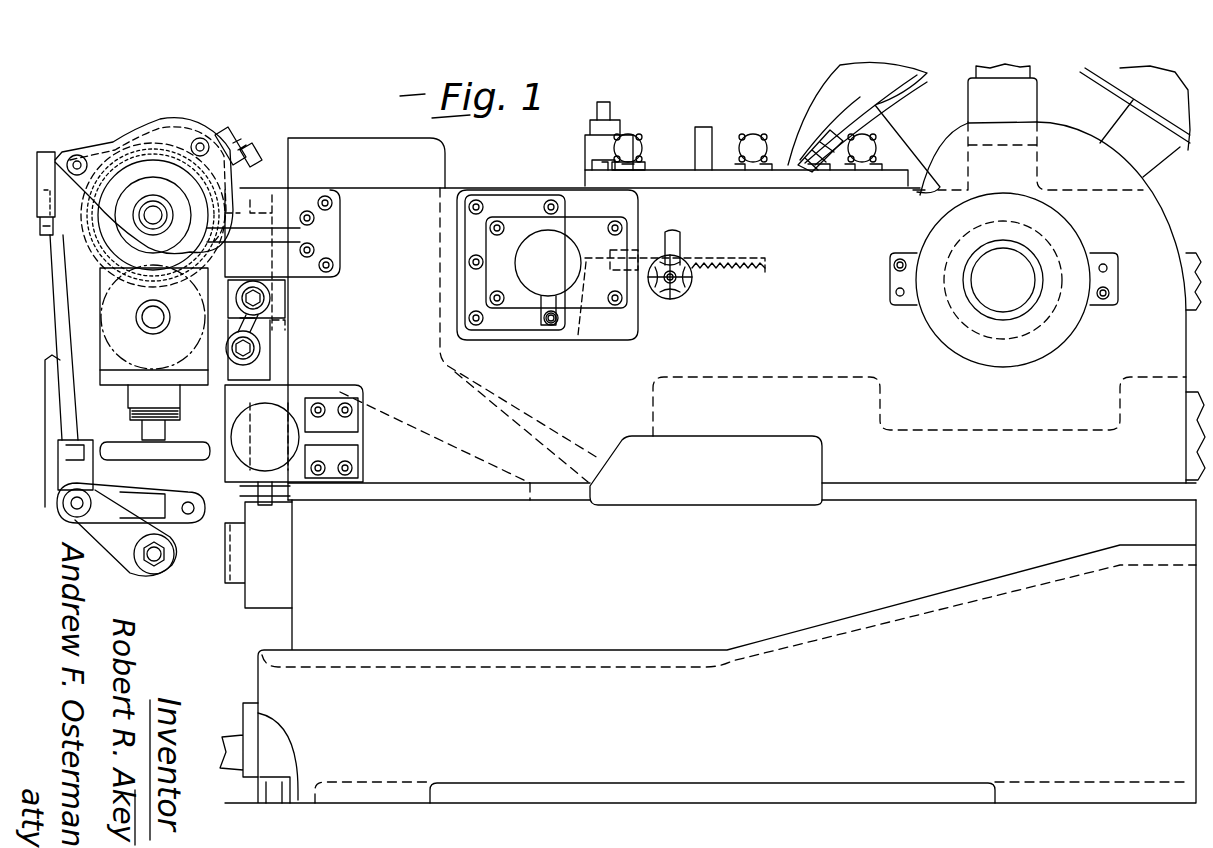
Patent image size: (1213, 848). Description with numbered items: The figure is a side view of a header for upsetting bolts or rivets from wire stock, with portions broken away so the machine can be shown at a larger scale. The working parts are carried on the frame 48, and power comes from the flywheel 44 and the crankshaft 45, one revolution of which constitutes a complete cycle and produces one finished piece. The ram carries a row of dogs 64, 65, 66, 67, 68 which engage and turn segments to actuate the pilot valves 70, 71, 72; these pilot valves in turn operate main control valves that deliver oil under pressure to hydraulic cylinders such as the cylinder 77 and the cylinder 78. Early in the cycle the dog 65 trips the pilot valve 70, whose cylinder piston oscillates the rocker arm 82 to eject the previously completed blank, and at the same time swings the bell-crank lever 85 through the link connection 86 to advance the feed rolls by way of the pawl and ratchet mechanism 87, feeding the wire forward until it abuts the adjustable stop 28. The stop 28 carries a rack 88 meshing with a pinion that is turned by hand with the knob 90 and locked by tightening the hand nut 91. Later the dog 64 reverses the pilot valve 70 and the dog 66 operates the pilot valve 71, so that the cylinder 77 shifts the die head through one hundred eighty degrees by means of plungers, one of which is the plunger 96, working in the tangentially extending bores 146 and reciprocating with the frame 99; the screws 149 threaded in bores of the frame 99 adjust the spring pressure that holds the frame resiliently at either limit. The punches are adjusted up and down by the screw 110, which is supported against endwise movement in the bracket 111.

The pawl and ratchet mechanism 87 is at (170, 132).
The plunger 96 is at (250, 288).
The tangentially extending bores 146 is at (268, 290).
The frame 99 is at (258, 340).
The screws 149 is at (235, 360).
The cylinder 77 is at (282, 420).
The rocker arm 82 is at (50, 410).
The link connection 86 is at (143, 488).
The bell-crank lever 85 is at (135, 530).
The cylinder 78 is at (540, 238).
The stop 28 is at (609, 297).
The screw 110 is at (612, 108).
The bracket 111 is at (590, 145).
The pilot valve 70 is at (630, 152).
The dog 64 is at (607, 172).
The dog 65 is at (628, 168).
The dog 66 is at (720, 165).
The pilot valve 71 is at (755, 155).
The dog 67 is at (806, 170).
The dog 68 is at (818, 166).
The pilot valve 72 is at (862, 160).
The flywheel 44 is at (812, 105).
The frame 48 is at (917, 195).
The hand nut 91 is at (680, 240).
The knob 90 is at (668, 293).
The rack 88 is at (737, 270).
The crankshaft 45 is at (1022, 272).